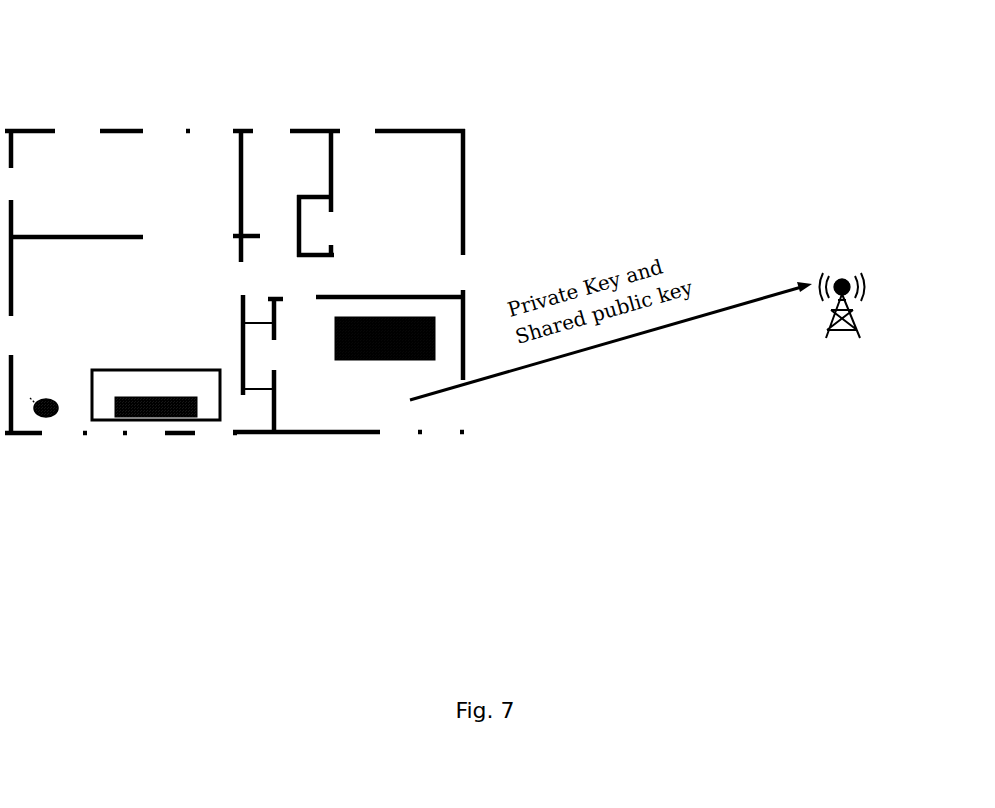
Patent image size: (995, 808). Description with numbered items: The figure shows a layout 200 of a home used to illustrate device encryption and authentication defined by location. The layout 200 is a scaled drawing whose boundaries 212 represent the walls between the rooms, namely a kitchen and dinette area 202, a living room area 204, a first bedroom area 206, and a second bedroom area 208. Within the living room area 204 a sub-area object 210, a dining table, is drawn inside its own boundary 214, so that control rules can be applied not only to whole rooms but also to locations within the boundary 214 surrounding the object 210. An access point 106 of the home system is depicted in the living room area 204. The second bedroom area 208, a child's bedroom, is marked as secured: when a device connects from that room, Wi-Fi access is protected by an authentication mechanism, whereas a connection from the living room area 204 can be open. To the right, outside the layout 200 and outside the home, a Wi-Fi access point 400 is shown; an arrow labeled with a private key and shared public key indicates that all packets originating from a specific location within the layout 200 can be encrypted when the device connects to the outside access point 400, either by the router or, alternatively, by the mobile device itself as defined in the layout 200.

The layout 200 is at (66, 100).
The kitchen and dinette area 202 is at (132, 222).
The living room area 204 is at (121, 399).
The first bedroom area 206 is at (377, 193).
The second bedroom area 208 is at (349, 409).
The object 210 is at (205, 405).
The boundaries 212 is at (368, 435).
The boundary surrounding an object 214 is at (105, 423).
The access point 106 is at (42, 418).
The access point 400 is at (826, 335).